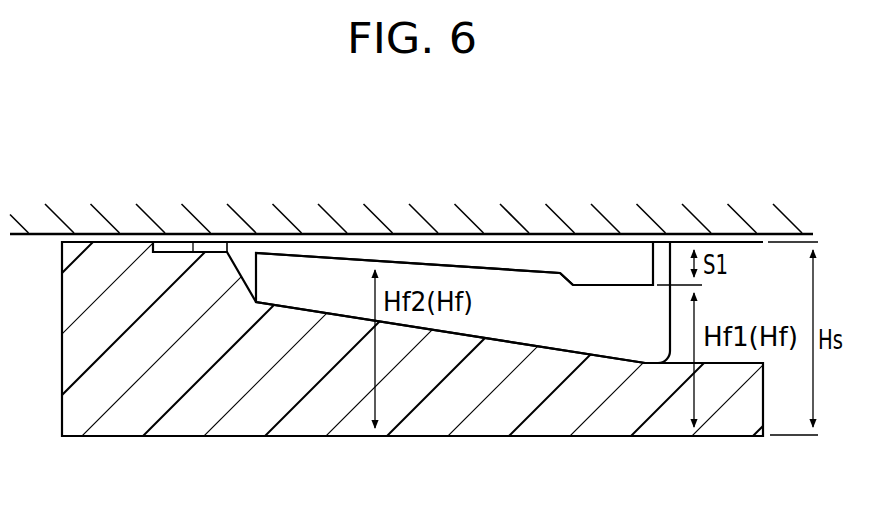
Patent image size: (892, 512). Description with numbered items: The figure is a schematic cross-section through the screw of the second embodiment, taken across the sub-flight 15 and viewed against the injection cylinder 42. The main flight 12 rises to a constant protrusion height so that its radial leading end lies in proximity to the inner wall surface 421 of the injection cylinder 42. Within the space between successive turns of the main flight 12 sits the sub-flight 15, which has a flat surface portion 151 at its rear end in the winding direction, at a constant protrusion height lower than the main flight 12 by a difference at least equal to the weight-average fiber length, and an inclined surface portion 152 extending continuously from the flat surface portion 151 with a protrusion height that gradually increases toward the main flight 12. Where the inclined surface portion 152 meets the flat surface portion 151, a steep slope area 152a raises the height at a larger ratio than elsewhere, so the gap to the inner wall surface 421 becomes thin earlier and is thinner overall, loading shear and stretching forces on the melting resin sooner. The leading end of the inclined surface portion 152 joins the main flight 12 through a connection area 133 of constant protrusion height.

The main flight 12 is at (107, 242).
The sub-flight 15 is at (463, 318).
The injection cylinder 42 is at (478, 182).
The inner wall surface 421 is at (27, 234).
The connection area 133 is at (193, 244).
The flat surface portion 151 is at (604, 283).
The inclined surface portion 152 is at (481, 271).
The steep slope area 152a is at (574, 283).